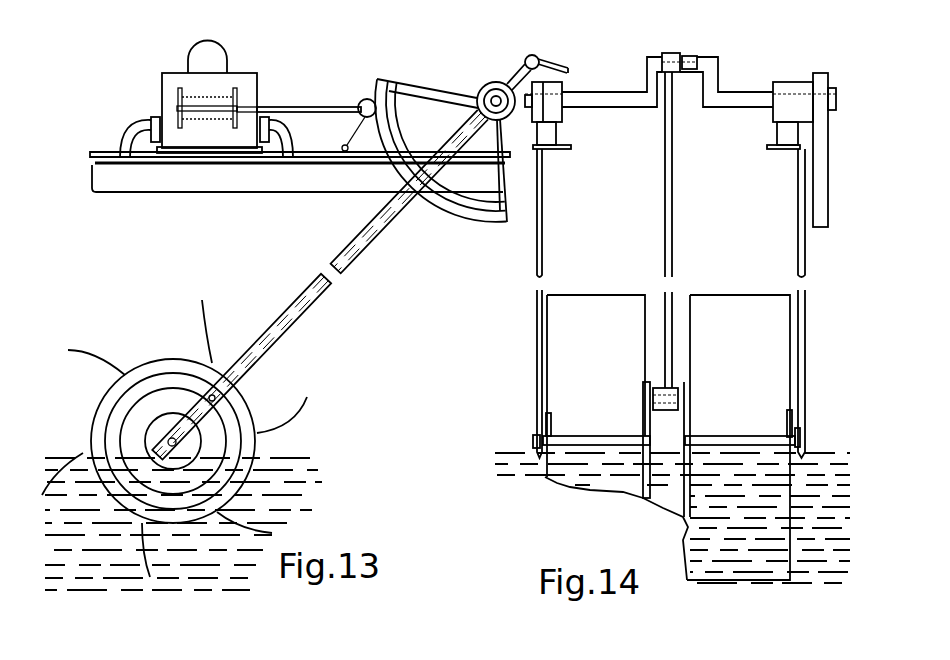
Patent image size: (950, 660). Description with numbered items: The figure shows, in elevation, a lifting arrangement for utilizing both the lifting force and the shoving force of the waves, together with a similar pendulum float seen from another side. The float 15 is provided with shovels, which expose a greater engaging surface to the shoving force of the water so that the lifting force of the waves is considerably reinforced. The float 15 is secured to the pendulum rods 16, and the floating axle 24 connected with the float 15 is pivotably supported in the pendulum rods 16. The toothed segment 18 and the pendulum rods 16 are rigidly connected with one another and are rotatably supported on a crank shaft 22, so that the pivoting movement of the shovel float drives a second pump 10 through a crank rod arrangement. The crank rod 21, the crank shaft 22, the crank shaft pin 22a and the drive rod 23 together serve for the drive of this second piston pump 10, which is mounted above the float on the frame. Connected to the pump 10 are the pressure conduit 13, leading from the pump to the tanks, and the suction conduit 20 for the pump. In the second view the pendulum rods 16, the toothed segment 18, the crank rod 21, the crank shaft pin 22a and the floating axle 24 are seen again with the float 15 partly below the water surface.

In FIG. 13, the pump 10 is at (167, 95).
In FIG. 13, the pressure conduit 13 is at (127, 147).
In FIG. 13, the float 15 is at (92, 427).
In FIG. 14, the float 15 is at (605, 298).
In FIG. 13, the pendulum rod 16 is at (345, 248).
In FIG. 14, the pendulum rod 16 is at (800, 265).
In FIG. 13, the toothed segment 18 is at (464, 215).
In FIG. 14, the toothed segment 18 is at (822, 203).
In FIG. 13, the suction conduit 20 is at (287, 133).
In FIG. 13, the crank rod 21 is at (307, 296).
In FIG. 14, the crank rod 21 is at (670, 223).
In FIG. 13, the crank shaft 22 is at (512, 80).
In FIG. 14, the crank shaft 22 is at (707, 83).
In FIG. 13, the crank shaft pin 22a is at (218, 398).
In FIG. 14, the crank shaft pin 22a is at (686, 398).
In FIG. 13, the drive rod 23 is at (566, 68).
In FIG. 14, the drive rod 23 is at (693, 54).
In FIG. 14, the floating axle 24 is at (533, 433).